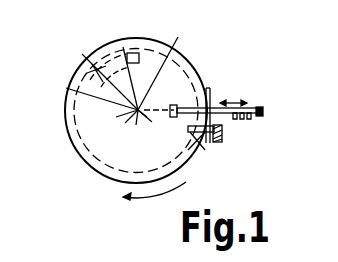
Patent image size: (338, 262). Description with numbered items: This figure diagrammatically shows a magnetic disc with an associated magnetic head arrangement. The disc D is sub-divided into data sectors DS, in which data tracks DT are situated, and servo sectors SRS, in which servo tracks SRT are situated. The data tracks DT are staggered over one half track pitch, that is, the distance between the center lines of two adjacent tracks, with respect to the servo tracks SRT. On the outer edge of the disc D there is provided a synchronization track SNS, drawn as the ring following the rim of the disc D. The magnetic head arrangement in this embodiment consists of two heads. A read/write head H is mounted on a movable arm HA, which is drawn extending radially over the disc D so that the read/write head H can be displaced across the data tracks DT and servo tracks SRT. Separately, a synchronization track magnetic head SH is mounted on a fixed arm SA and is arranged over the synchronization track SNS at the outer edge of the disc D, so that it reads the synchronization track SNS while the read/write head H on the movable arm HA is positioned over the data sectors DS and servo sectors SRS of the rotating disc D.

The servo tracks SRT is at (138, 110).
The servo sectors SRS is at (180, 68).
The data tracks DT is at (82, 54).
The data sectors DS is at (66, 88).
The synchronization track SNS is at (194, 83).
The read/write head H is at (172, 106).
The magnetic disc D is at (211, 99).
The movable arm HA is at (262, 109).
The fixed arm SA is at (219, 130).
The synchronization track magnetic head SH is at (193, 150).